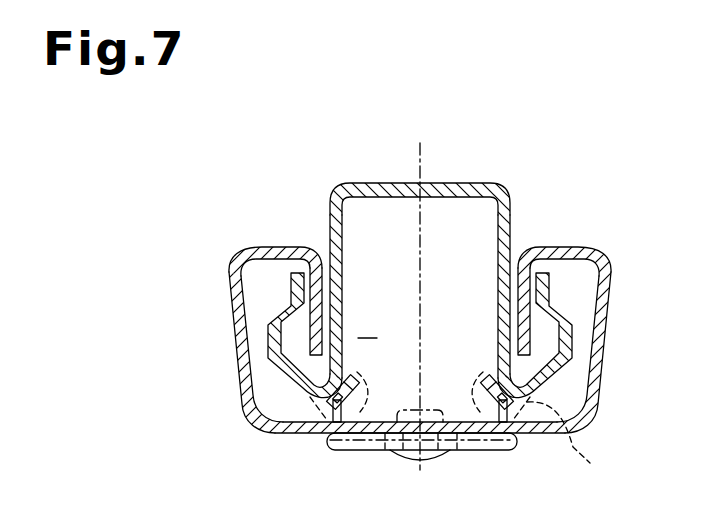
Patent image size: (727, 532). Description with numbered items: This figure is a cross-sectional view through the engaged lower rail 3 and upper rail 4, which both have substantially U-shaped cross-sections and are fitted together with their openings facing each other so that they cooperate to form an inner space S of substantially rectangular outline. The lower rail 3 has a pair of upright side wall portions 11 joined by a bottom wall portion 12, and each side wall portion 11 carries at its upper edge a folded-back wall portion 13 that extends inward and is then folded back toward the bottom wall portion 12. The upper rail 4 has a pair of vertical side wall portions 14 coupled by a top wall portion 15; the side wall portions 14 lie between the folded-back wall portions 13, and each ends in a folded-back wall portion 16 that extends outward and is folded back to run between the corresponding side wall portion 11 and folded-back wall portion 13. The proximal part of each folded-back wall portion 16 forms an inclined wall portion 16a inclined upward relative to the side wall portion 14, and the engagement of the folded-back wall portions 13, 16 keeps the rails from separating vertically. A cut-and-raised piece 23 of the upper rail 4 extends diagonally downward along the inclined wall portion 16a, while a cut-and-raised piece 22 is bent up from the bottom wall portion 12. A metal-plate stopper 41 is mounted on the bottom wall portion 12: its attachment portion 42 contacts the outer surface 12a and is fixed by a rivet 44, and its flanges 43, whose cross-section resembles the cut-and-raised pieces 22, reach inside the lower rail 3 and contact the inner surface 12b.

The lower rail 3 is at (420, 349).
The upper rail 4 is at (421, 292).
The side wall portion 11 is at (231, 342).
The bottom wall portion 12 is at (508, 451).
The outer surface 12a is at (465, 451).
The inner surface 12b is at (462, 401).
The folded-back wall portion 13 is at (322, 293).
The side wall portion 14 is at (344, 256).
The top wall portion 15 is at (458, 181).
The folded-back wall portion 16 is at (290, 292).
The inclined wall portion 16a is at (279, 368).
The cut-and-raised piece 22 is at (590, 463).
The cut-and-raised piece 23 is at (350, 405).
The stopper 41 is at (327, 448).
The attachment portion 42 is at (357, 451).
The flange 43 is at (352, 378).
The rivet 44 is at (410, 461).
The inner space S is at (367, 324).